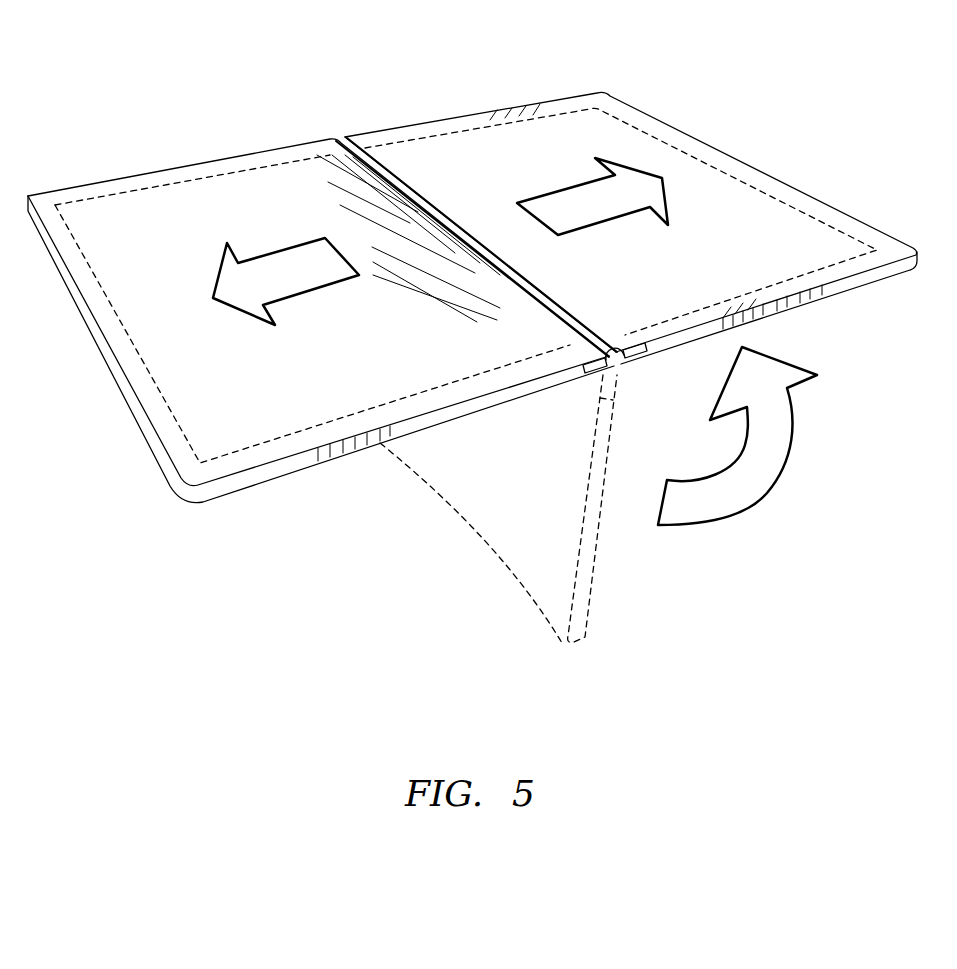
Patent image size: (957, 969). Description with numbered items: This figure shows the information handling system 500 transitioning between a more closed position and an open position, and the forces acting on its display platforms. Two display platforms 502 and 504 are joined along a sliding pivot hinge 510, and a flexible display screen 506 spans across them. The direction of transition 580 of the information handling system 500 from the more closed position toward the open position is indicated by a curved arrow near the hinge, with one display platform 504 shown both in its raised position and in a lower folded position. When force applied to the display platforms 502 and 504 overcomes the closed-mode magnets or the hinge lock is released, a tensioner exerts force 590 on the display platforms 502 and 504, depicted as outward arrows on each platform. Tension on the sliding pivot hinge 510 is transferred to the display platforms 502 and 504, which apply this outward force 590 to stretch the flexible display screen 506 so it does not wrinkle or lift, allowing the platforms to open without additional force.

The information handling system 500 is at (827, 58).
The display platform 502 is at (172, 473).
The display platform 504 is at (897, 273).
The flexible display screen 506 is at (542, 137).
The sliding pivot hinge 510 is at (618, 372).
The direction of transition 580 is at (763, 493).
The force 590 is at (278, 247).